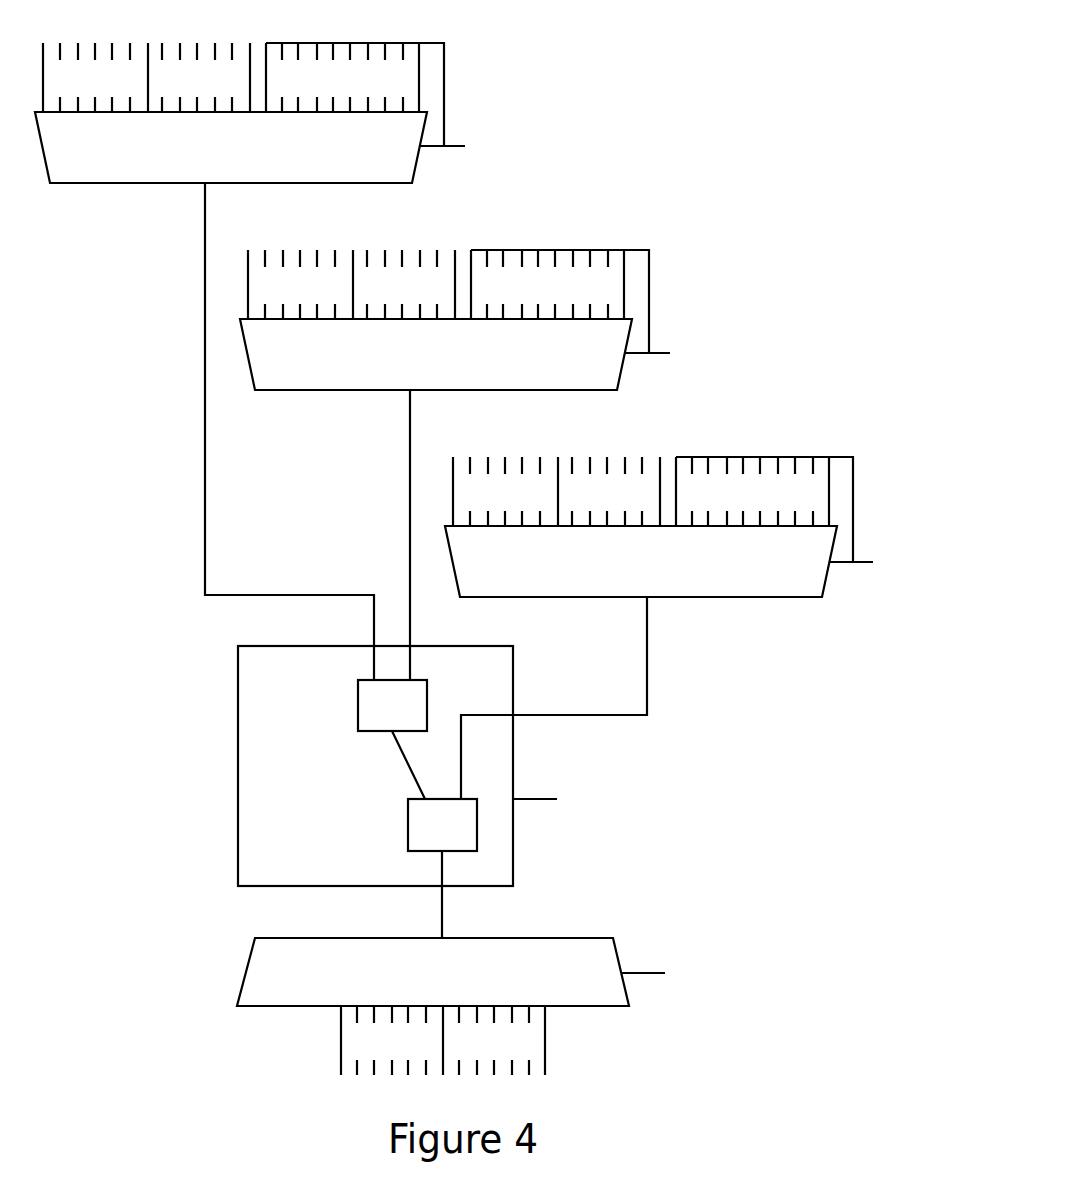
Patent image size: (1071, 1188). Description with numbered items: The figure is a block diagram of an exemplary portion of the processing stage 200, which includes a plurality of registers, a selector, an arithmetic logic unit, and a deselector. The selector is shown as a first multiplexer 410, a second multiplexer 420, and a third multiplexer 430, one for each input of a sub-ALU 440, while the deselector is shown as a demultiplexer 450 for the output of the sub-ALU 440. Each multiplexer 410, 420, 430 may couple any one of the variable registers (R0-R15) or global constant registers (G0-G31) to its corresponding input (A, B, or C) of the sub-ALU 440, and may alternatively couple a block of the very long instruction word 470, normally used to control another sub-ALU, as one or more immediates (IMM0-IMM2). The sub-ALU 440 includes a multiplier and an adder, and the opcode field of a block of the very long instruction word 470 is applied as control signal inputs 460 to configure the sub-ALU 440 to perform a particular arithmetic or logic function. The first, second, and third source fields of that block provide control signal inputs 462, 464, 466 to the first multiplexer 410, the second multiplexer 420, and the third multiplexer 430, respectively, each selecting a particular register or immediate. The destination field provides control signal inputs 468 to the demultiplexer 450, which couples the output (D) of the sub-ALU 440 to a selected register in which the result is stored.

The processing stage 200 is at (772, 41).
The first multiplexer 410 is at (363, 143).
The second multiplexer 420 is at (568, 350).
The third multiplexer 430 is at (773, 557).
The sub-ALU 440 is at (388, 847).
The demultiplexer 450 is at (567, 967).
The control signal inputs to the sub-ALU 460 is at (577, 834).
The control signal inputs to the first multiplexer 462 is at (476, 174).
The control signal inputs to the second multiplexer 464 is at (680, 333).
The control signal inputs to the third multiplexer 466 is at (885, 540).
The control signal inputs to the demultiplexer 468 is at (687, 1000).
The very long instruction word 470 is at (482, 89).